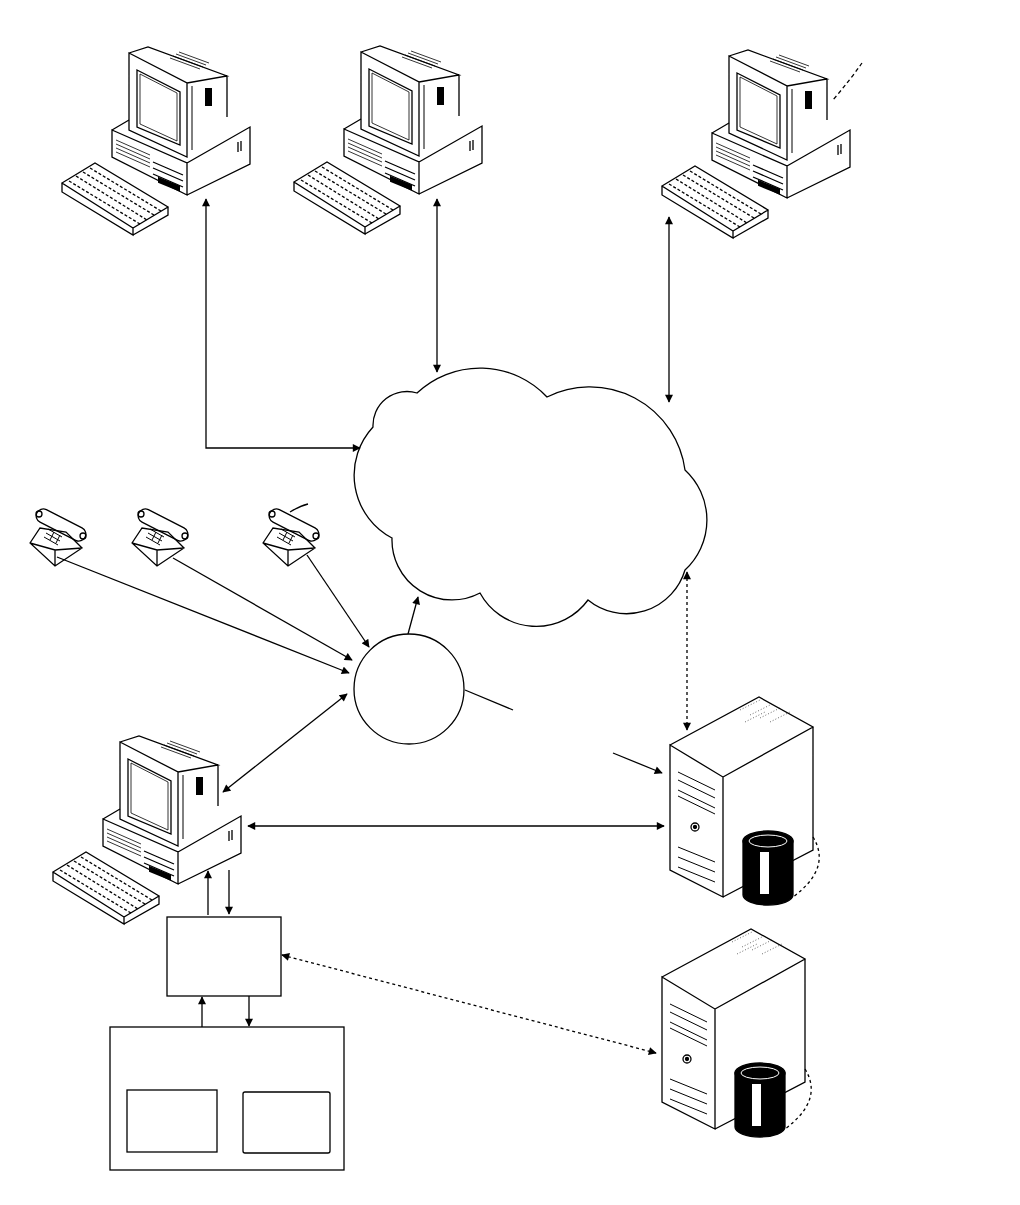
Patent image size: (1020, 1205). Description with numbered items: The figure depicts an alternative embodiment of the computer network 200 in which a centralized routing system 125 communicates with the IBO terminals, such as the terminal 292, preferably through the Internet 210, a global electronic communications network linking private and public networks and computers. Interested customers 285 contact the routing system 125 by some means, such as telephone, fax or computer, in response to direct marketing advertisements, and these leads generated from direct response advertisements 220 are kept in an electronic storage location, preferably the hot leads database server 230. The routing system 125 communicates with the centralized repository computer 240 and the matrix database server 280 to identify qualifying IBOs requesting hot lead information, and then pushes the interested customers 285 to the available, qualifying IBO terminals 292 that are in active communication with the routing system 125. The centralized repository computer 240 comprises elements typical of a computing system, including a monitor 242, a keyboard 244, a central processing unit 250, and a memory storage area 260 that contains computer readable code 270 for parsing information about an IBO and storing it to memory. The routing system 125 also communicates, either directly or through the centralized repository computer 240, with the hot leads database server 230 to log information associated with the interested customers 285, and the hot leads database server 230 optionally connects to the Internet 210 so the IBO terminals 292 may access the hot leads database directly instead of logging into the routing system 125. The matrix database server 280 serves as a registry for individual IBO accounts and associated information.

The computer network 200 is at (773, 583).
The IBO terminal 292 is at (463, 88).
The Internet 210 is at (710, 492).
The interested customer 285 is at (82, 525).
The centralized routing system 125 is at (465, 670).
The leads generated from direct response advertisements 220 is at (593, 708).
The centralized repository computer 240 is at (175, 727).
The monitor 242 is at (225, 773).
The keyboard 244 is at (83, 850).
The central processing unit 250 is at (270, 940).
The memory storage area 260 is at (187, 1090).
The computer readable code 270 is at (283, 1092).
The hot leads database server 230 is at (793, 712).
The matrix database server 280 is at (810, 1030).